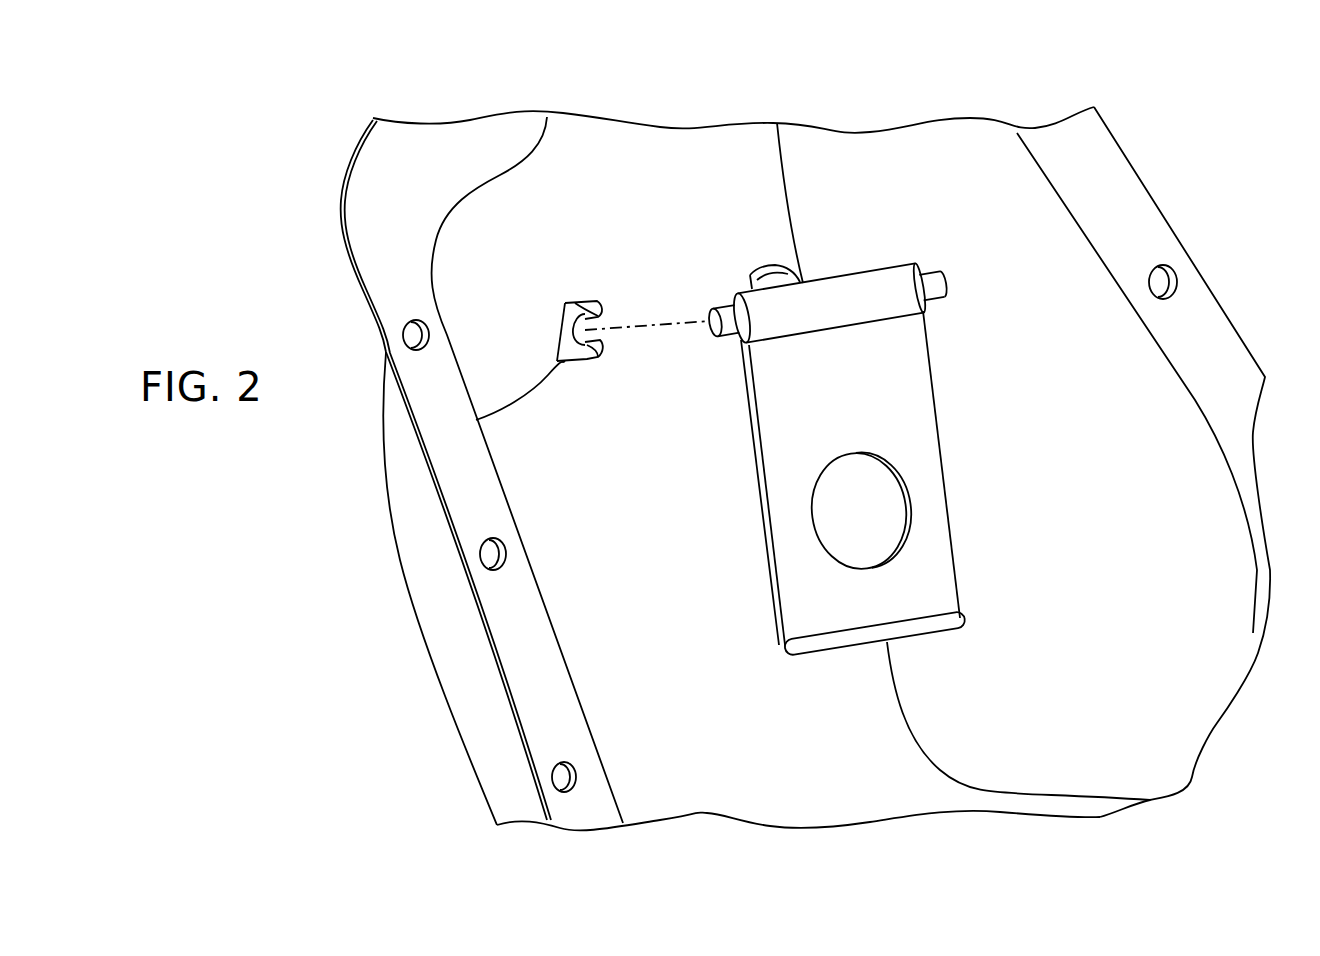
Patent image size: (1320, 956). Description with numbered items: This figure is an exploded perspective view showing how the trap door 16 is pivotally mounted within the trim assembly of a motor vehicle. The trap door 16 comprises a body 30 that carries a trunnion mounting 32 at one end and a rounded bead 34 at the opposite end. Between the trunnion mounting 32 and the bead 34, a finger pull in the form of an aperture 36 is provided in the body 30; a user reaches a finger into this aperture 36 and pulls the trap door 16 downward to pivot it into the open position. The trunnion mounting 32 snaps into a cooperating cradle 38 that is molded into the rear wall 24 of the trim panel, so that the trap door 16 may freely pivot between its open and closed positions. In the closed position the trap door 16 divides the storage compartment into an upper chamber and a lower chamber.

The trap door 16 is at (829, 458).
The rear wall 24 is at (673, 150).
The body 30 is at (829, 477).
The trunnion mounting 32 is at (867, 287).
The rounded bead 34 is at (838, 640).
The aperture 36 is at (812, 518).
The cradle 38 is at (750, 274).